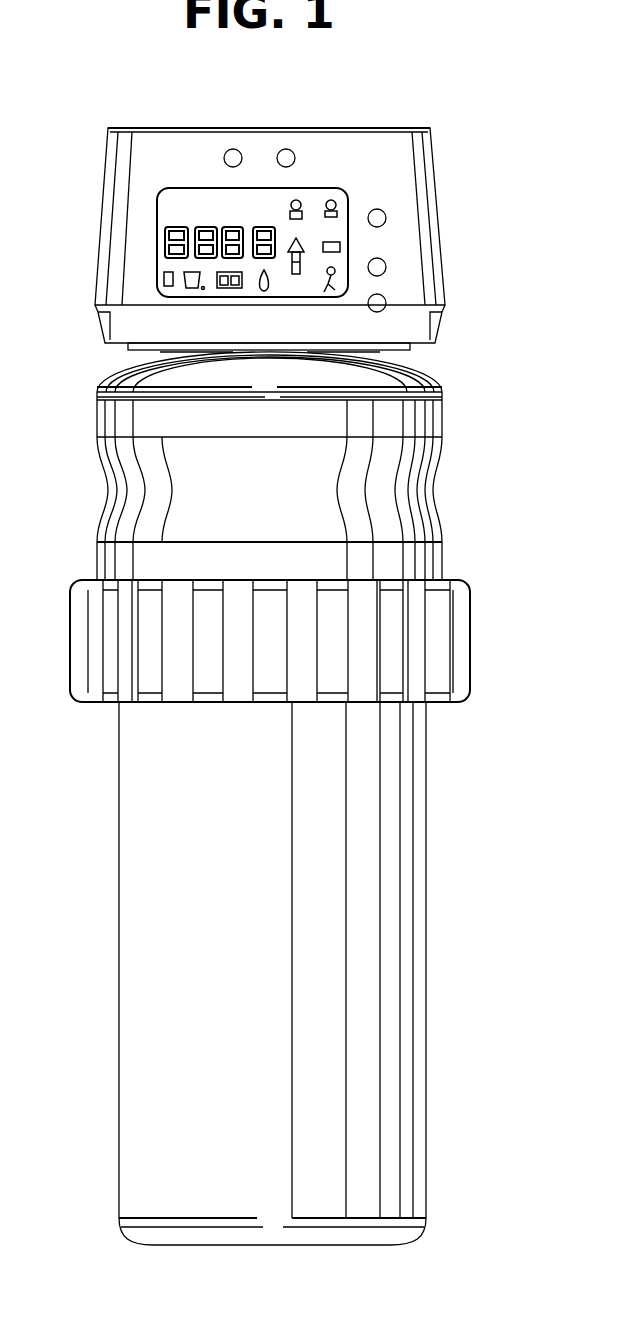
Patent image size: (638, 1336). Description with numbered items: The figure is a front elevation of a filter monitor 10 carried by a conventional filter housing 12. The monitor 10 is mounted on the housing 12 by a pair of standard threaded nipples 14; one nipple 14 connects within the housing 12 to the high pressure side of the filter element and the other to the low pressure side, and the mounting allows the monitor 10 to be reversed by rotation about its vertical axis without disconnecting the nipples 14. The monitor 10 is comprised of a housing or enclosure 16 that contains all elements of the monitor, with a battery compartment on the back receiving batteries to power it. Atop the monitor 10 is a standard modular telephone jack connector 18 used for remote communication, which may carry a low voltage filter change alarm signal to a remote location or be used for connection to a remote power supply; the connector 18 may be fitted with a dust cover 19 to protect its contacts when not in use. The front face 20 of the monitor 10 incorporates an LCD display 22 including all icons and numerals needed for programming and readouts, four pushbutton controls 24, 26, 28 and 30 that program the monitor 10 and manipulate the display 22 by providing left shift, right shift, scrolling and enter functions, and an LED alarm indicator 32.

The filter monitor 10 is at (127, 150).
The filter housing 12 is at (380, 484).
The threaded nipples 14 is at (200, 357).
The housing or enclosure 16 is at (393, 150).
The RJ-11 connector 18 is at (397, 127).
The dust cover 19 is at (344, 128).
The front face 20 is at (180, 150).
The LCD display 22 is at (165, 268).
The pushbutton control 24 is at (233, 149).
The pushbutton control 26 is at (287, 149).
The pushbutton control 28 is at (386, 218).
The pushbutton control 30 is at (386, 267).
The LED alarm indicator 32 is at (386, 303).